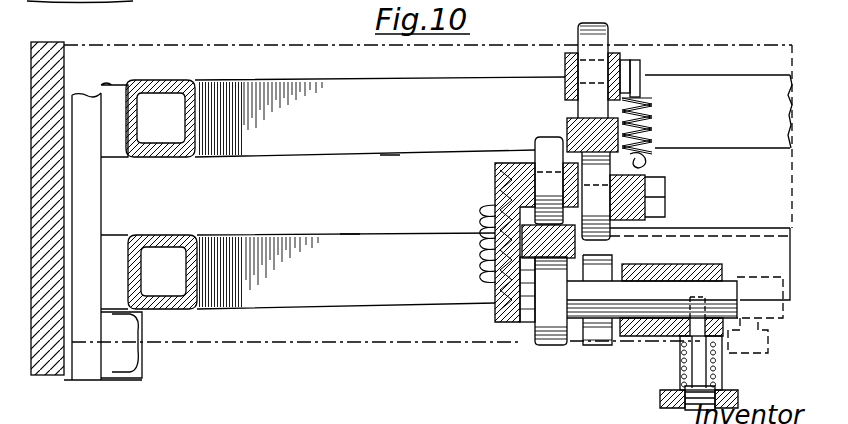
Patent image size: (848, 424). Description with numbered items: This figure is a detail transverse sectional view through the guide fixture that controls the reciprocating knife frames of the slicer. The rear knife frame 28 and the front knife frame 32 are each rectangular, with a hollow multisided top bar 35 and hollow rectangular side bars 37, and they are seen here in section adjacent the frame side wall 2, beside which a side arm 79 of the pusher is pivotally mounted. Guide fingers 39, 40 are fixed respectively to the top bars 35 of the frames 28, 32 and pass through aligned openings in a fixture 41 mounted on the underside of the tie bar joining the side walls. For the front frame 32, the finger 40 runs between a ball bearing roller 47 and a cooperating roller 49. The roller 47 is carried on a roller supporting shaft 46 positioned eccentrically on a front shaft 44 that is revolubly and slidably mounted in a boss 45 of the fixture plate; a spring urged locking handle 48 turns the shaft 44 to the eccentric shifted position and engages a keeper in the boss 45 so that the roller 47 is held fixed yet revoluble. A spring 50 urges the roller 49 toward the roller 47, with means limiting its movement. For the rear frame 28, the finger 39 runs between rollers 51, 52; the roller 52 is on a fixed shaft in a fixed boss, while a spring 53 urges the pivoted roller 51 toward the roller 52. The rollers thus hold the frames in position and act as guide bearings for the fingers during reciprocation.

The side wall 2 is at (62, 249).
The knife frame 28 is at (378, 74).
The knife frame 32 is at (304, 313).
The top bar 35 is at (390, 156).
The side bar 37 is at (200, 72).
The guide finger 39 is at (567, 125).
The guide finger 40 is at (490, 220).
The fixture 41 is at (657, 226).
The front shaft 44 is at (644, 312).
The boss 45 is at (722, 270).
The roller supporting shaft 46 is at (535, 337).
The ball bearing roller 47 is at (558, 346).
The locking handle 48 is at (722, 373).
The roller 49 is at (537, 137).
The spring 50 is at (490, 255).
The roller 51 is at (608, 37).
The roller 52 is at (612, 240).
The spring 53 is at (655, 105).
The side arm 79 is at (97, 215).